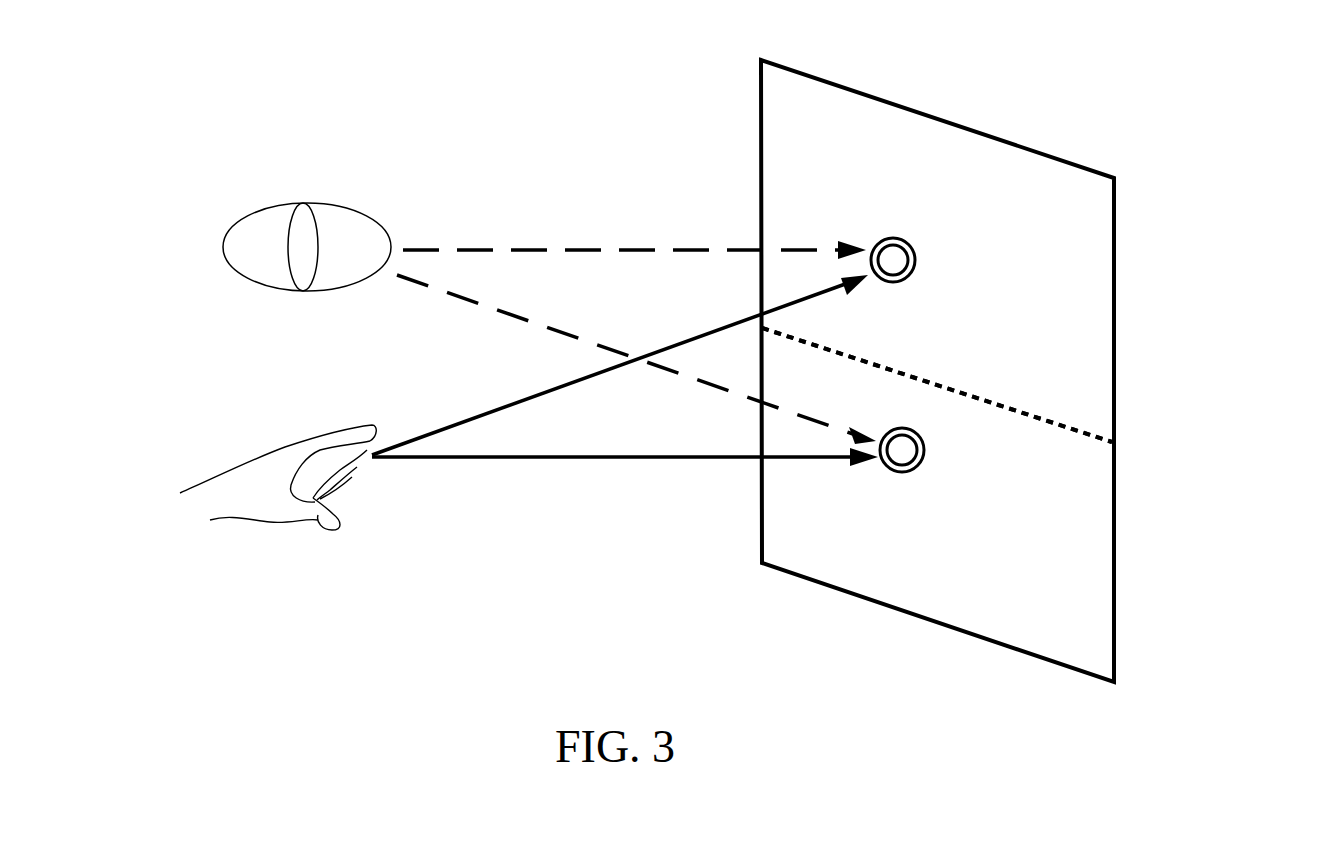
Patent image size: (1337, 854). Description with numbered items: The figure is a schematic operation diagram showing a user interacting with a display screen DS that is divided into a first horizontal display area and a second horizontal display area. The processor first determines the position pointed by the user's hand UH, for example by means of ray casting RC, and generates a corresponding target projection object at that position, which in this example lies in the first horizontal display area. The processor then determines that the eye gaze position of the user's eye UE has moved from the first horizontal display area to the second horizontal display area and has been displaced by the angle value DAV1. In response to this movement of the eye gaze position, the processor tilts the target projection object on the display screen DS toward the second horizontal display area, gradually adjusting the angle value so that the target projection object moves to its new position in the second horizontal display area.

The display screen DS is at (950, 106).
The user's eye UE is at (313, 178).
The user's hand UH is at (258, 410).
The angle value DAV1 is at (548, 262).
The ray casting RC is at (497, 428).